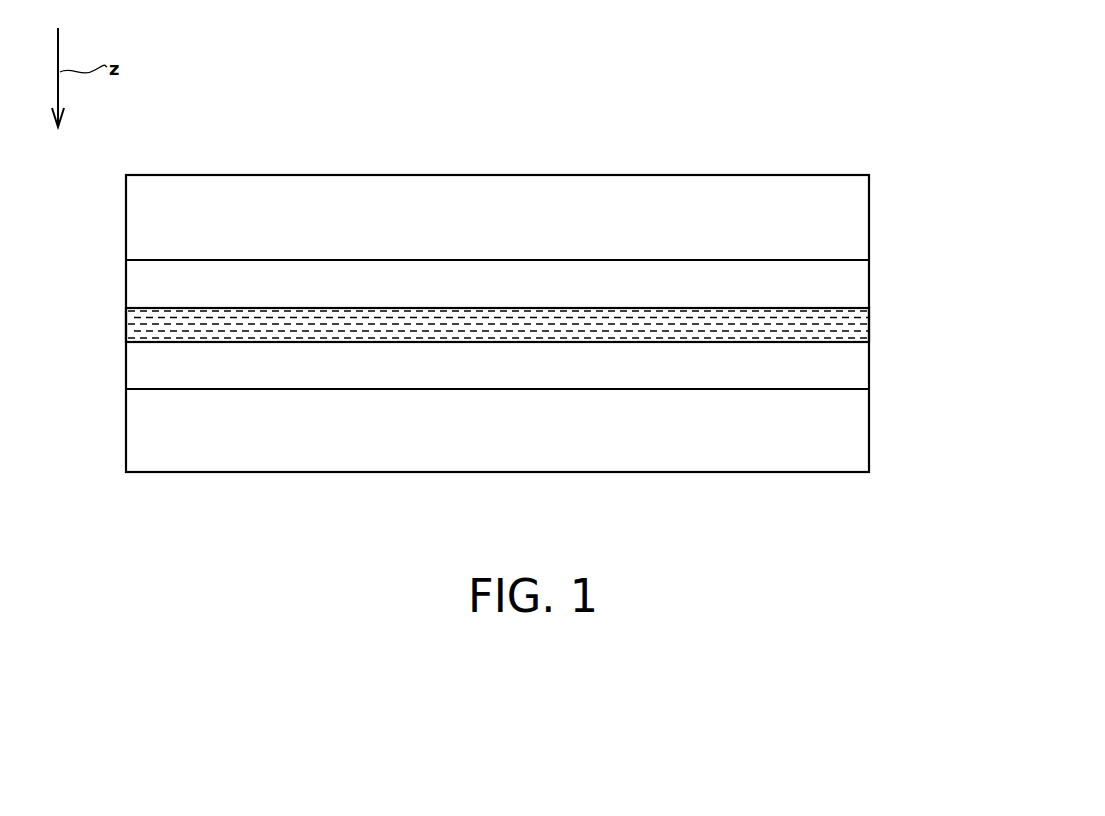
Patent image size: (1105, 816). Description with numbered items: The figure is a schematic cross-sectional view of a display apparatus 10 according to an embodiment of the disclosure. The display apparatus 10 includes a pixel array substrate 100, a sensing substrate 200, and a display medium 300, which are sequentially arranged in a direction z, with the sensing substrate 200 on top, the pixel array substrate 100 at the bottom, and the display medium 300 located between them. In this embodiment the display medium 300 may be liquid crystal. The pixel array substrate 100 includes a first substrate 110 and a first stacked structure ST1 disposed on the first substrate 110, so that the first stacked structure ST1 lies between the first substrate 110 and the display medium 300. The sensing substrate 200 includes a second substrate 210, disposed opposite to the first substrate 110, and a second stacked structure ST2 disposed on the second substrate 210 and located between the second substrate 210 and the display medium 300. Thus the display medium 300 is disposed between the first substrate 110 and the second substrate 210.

The display apparatus 10 is at (1052, 523).
The pixel array substrate 100 is at (605, 407).
The first substrate 110 is at (860, 437).
The first stacked structure ST1 is at (860, 371).
The display medium 300 is at (860, 327).
The second stacked structure ST2 is at (860, 291).
The second substrate 210 is at (860, 226).
The sensing substrate 200 is at (605, 241).